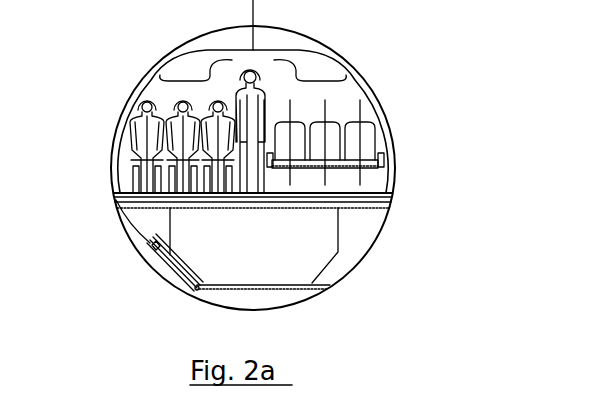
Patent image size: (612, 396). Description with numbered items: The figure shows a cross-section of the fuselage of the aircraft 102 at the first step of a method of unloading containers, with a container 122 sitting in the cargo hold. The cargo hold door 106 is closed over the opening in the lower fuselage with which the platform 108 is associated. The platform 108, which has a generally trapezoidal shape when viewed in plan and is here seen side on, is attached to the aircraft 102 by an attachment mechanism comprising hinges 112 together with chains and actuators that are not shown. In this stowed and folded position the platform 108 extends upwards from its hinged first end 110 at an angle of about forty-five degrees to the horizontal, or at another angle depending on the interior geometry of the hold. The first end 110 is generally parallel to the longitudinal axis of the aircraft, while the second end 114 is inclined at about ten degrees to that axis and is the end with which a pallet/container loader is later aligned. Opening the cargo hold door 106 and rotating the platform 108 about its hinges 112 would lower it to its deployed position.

The aircraft 102 is at (120, 56).
The cargo hold door 106 is at (125, 220).
The platform 108 is at (162, 268).
The first end 110 is at (195, 292).
The hinges 112 is at (193, 290).
The second end 114 is at (158, 248).
The container 122 is at (330, 233).